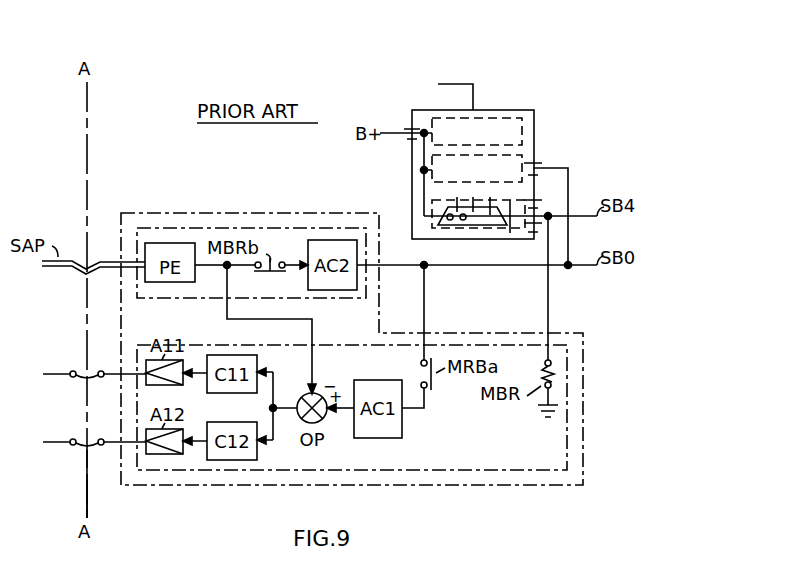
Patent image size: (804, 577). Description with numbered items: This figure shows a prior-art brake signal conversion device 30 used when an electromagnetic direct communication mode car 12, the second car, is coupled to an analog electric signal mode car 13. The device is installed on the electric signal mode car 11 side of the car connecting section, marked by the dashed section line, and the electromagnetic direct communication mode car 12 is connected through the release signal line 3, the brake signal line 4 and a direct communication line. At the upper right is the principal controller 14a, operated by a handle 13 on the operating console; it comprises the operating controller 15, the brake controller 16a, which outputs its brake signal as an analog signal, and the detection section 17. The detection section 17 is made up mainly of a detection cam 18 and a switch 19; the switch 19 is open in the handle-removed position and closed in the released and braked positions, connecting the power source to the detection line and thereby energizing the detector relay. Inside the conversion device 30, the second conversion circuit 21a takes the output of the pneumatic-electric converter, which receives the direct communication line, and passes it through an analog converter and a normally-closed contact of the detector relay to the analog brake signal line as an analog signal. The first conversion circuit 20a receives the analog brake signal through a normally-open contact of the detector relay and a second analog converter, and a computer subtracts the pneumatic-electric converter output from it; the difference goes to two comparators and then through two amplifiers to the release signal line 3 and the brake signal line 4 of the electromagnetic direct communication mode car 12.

The release signal line 3 is at (52, 371).
The brake signal line 4 is at (52, 439).
The electric signal mode car 11 is at (88, 500).
The electromagnetic direct communication mode car 12 is at (83, 506).
The handle 13 is at (455, 84).
The principal controller 14a is at (485, 110).
The operating controller 15 is at (522, 132).
The brake controller 16a is at (522, 160).
The detection section 17 is at (522, 207).
The detection cam 18 is at (473, 226).
The switch 19 is at (452, 226).
The first conversion circuit 20a is at (525, 472).
The second conversion circuit 21a is at (181, 228).
The conversion device 30 is at (250, 213).